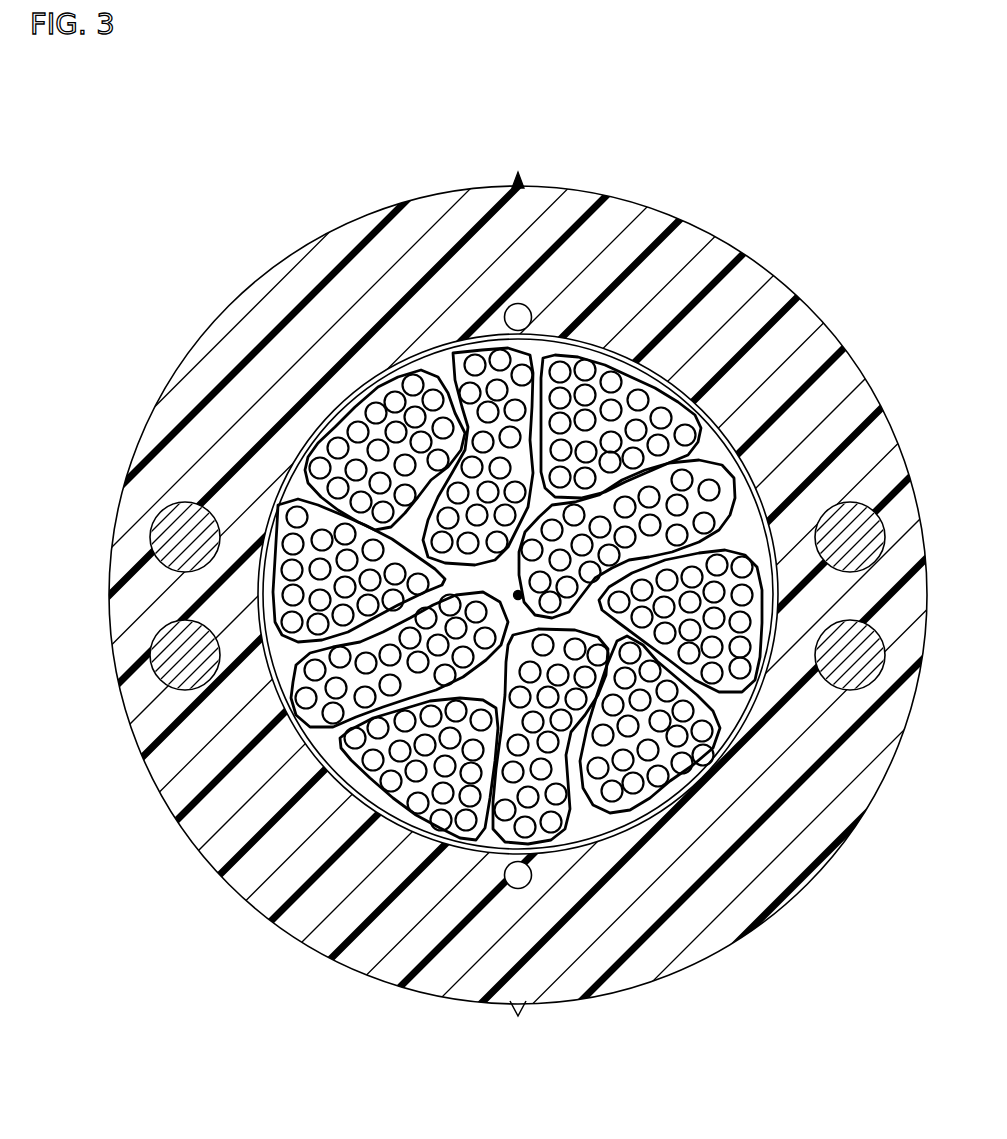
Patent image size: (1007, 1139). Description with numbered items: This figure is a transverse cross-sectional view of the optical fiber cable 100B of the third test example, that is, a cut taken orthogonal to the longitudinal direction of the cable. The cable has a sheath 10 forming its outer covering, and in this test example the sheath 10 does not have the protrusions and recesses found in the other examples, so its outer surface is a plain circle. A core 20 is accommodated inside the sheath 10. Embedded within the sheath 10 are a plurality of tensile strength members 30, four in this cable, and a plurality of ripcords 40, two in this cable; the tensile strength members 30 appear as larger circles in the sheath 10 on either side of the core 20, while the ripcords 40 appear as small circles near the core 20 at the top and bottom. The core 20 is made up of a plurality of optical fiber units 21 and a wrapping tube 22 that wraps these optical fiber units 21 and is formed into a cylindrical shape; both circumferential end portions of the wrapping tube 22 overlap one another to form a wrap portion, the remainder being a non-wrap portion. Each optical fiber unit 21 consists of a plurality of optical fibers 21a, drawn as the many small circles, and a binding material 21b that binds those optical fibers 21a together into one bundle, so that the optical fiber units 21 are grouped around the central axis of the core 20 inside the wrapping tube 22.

The optical fiber cable 100B is at (233, 158).
The sheath 10 is at (720, 248).
The core 20 is at (311, 762).
The optical fiber unit 21 is at (492, 725).
The optical fiber 21a is at (466, 820).
The binding material 21b is at (419, 769).
The wrapping tube 22 is at (419, 769).
The tensile strength member 30 is at (869, 508).
The ripcord 40 is at (508, 328).